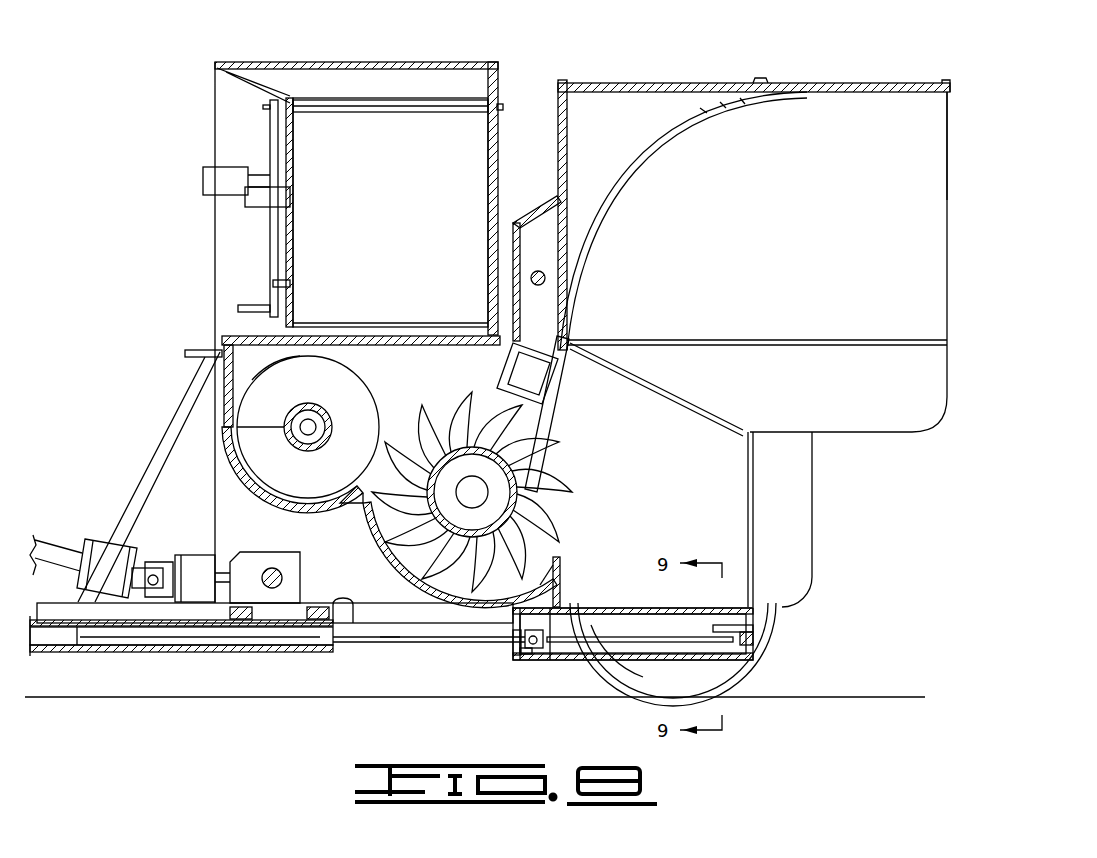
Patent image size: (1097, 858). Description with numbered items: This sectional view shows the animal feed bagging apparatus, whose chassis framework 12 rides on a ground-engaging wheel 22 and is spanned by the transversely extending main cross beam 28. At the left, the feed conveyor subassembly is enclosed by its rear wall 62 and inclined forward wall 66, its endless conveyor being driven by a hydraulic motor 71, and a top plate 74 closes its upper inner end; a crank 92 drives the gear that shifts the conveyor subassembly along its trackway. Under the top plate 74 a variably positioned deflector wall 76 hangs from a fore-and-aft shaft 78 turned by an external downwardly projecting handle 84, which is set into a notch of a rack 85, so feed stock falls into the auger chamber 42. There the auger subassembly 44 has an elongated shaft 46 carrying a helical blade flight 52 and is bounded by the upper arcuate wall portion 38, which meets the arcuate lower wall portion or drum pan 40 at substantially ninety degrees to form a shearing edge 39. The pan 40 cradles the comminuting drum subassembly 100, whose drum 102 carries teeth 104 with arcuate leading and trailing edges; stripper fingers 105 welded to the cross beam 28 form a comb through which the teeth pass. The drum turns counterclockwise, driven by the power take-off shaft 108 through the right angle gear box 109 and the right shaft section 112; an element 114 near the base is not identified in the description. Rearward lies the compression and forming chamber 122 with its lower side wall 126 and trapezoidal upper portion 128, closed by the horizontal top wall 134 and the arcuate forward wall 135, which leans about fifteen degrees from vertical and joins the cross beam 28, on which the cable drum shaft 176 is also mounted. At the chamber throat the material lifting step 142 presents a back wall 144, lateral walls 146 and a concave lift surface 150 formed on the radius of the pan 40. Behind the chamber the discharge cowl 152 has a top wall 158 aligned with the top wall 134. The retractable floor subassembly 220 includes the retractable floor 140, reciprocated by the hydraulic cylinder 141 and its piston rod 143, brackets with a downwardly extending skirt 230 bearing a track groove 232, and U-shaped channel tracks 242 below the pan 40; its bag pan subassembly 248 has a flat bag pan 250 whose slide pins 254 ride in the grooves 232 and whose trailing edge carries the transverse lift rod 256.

The framework 12 is at (350, 605).
The ground-engaging wheel 22 is at (720, 677).
The main cross beam 28 is at (546, 342).
The upper arcuate wall portion 38 is at (238, 466).
The shearing edge 39 is at (350, 513).
The drum pan 40 is at (378, 557).
The auger chamber 42 is at (262, 367).
The auger subassembly 44 is at (378, 390).
The auger shaft 46 is at (316, 418).
The helical blade flight 52 is at (350, 472).
The rear wall 62 is at (496, 152).
The inclined forward wall 66 is at (252, 126).
The hydraulic motor 71 is at (206, 176).
The top plate 74 is at (358, 62).
The deflector wall 76 is at (398, 204).
The fore-and-aft shaft 78 is at (413, 108).
The handle 84 is at (268, 230).
The rack 85 is at (273, 283).
The crank 92 is at (190, 350).
The comminuting drum subassembly 100 is at (447, 407).
The drum 102 is at (538, 497).
The teeth 104 is at (553, 470).
The stripper fingers 105 is at (556, 418).
The power take-off shaft 108 is at (62, 556).
The right angle gear box 109 is at (286, 605).
The right shaft section 112 is at (270, 566).
The ground 114 is at (55, 648).
The compression and forming chamber 122 is at (640, 200).
The lower side wall 126 is at (690, 479).
The upper portion 128 is at (720, 244).
The top wall 134 is at (935, 83).
The forward wall 135 is at (723, 112).
The retractable floor 140 is at (737, 607).
The hydraulic cylinder 141 is at (120, 633).
The material lifting step 142 is at (574, 565).
The piston rod 143 is at (390, 640).
The back wall 144 is at (556, 563).
The lateral walls 146 is at (553, 652).
The lift surface 150 is at (500, 592).
The discharge cowl 152 is at (897, 286).
The top wall 158 is at (946, 83).
The common shaft 176 is at (546, 279).
The retractable floor subassembly 220 is at (601, 605).
The skirt 230 is at (517, 657).
The track groove 232 is at (686, 640).
The channel track 242 is at (368, 615).
The bag pan subassembly 248 is at (627, 672).
The bag pan 250 is at (622, 663).
The slide pins 254 is at (523, 662).
The lift rod 256 is at (762, 636).